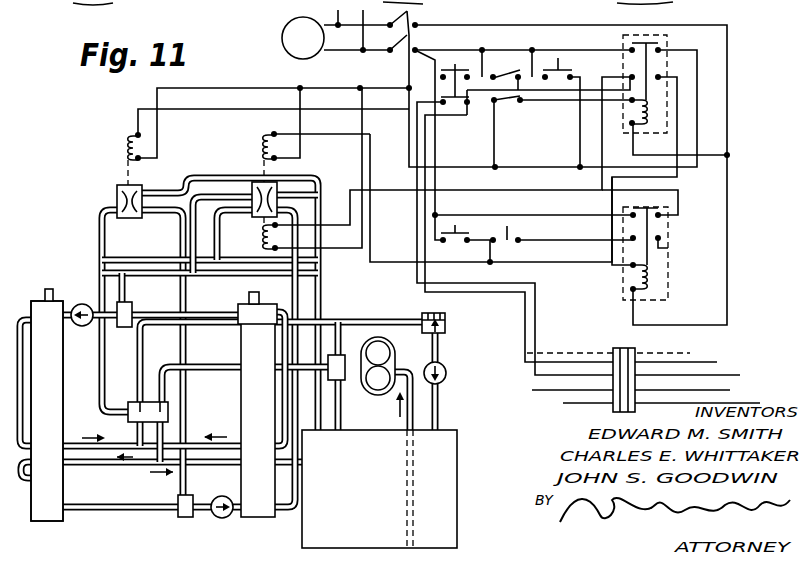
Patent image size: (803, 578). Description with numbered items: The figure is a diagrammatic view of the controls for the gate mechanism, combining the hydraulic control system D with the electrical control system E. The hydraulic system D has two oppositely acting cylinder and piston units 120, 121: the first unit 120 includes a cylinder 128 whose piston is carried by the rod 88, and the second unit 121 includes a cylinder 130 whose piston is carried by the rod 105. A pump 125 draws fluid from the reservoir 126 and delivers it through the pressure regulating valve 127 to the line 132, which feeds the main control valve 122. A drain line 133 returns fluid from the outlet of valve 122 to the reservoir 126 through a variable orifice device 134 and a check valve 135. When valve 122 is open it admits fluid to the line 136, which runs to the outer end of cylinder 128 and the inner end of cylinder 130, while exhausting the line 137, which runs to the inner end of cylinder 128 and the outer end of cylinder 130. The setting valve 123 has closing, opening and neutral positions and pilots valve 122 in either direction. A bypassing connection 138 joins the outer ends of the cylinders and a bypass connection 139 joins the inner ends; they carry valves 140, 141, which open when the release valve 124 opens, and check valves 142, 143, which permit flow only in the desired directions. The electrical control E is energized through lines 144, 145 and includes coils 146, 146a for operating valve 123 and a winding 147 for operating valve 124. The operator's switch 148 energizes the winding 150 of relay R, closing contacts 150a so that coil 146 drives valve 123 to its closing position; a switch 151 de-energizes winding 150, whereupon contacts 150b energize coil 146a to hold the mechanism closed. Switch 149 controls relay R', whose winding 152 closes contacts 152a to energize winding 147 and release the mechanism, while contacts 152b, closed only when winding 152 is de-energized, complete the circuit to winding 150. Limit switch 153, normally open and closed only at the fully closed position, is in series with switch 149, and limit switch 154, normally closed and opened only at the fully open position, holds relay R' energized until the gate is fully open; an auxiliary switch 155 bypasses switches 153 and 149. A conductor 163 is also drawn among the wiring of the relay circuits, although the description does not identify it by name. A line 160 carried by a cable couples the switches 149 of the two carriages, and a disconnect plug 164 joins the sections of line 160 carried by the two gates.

The cylinder and piston unit 120 is at (34, 297).
The rod 88 is at (53, 299).
The cylinder 128 is at (63, 379).
The check valve 143 is at (91, 330).
The bypass connection 139 is at (160, 286).
The valve 141 is at (124, 300).
The release valve 124 is at (146, 190).
The operating or setting valve 123 is at (280, 188).
The winding 147 is at (126, 134).
The coil 146 is at (260, 148).
The coil 146a is at (262, 243).
The rod 105 is at (249, 296).
The cylinder and piston unit 121 is at (280, 298).
The cylinder 130 is at (242, 414).
The pressure regulating valve 127 is at (338, 354).
The drain line 133 is at (395, 321).
The variable orifice device 134 is at (442, 314).
The pump 125 is at (394, 351).
The check valve 135 is at (447, 376).
The reservoir 126 is at (455, 430).
The main control valve 122 is at (132, 397).
The line 132 is at (228, 367).
The line 137 is at (98, 419).
The line 136 is at (84, 466).
The bypassing connection 138 is at (127, 512).
The valve 140 is at (183, 518).
The check valve 142 is at (225, 518).
The line 144 is at (444, 28).
The line 145 is at (624, 15).
The switch 149 is at (460, 57).
The limit switch 153 is at (506, 70).
The limit switch 154 is at (506, 103).
The switch 155 is at (564, 71).
The switch 148 is at (460, 232).
The switch 151 is at (508, 238).
The winding 152 is at (650, 113).
The contacts 152a is at (658, 42).
The contacts 152b is at (660, 72).
The winding 150 is at (655, 283).
The contacts 150a is at (660, 238).
The contacts 150b is at (655, 208).
The line 160 is at (536, 346).
The conductor 163 is at (420, 252).
The disconnect plug 164 is at (636, 351).
The electrical control system E is at (324, 75).
The hydraulic control system D is at (96, 242).
The relay R is at (723, 251).
The relay R' is at (713, 78).